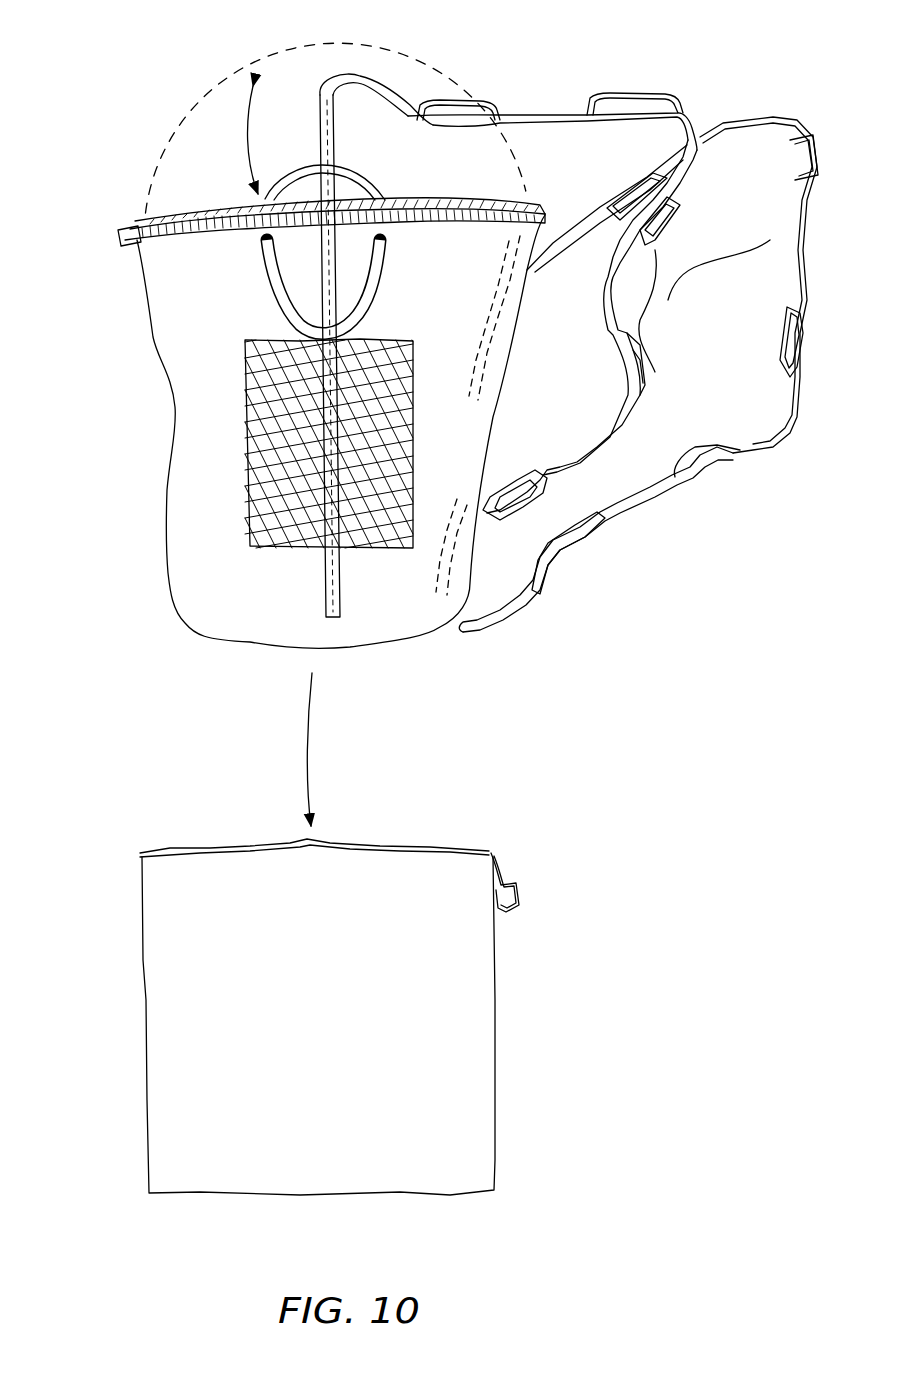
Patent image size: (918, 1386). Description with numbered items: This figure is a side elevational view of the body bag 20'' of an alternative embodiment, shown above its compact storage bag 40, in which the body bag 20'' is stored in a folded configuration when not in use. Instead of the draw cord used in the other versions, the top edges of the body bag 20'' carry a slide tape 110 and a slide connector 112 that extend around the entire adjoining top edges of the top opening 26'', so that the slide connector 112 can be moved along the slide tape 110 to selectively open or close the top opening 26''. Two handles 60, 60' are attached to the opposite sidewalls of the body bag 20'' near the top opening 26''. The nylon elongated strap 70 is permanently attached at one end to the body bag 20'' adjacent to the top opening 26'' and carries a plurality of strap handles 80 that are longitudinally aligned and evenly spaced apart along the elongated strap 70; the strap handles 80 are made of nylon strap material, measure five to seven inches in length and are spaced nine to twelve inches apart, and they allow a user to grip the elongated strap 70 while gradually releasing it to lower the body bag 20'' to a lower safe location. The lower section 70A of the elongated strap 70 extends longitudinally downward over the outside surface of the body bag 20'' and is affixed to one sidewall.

The body bag 20'' is at (298, 431).
The top opening 26'' is at (373, 178).
The storage bag 40 is at (146, 910).
The handle 60 is at (356, 168).
The handle 60' is at (291, 287).
The elongated strap 70 is at (529, 117).
The lower section of the elongated strap 70A is at (322, 582).
The strap handles 80 is at (628, 97).
The slide tape 110 is at (180, 211).
The slide connector 112 is at (120, 234).